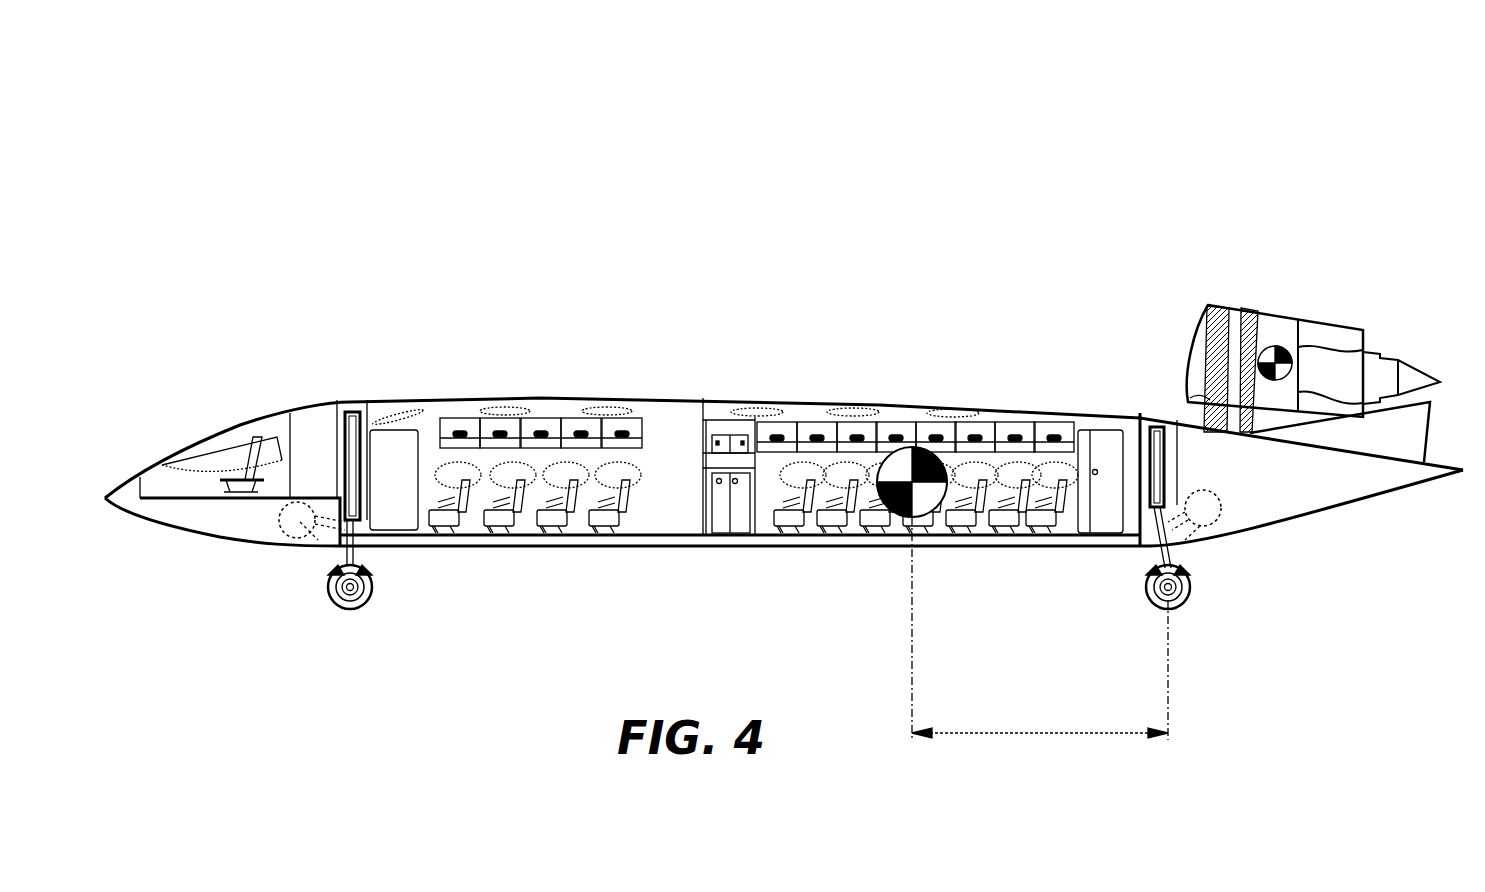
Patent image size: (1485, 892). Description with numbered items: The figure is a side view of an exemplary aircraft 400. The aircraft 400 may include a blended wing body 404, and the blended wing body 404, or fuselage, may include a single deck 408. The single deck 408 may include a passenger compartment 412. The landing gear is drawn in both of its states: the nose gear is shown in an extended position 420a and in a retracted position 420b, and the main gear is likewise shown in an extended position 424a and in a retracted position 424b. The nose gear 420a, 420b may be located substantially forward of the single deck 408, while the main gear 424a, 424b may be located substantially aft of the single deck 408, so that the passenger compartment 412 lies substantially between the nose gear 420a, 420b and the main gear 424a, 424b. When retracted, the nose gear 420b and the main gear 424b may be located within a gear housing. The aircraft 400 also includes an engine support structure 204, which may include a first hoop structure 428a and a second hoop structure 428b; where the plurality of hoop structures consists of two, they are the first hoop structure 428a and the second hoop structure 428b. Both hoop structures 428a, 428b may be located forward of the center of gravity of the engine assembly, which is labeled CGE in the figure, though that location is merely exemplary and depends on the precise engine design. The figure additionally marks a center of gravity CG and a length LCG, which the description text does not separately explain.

The aircraft 400 is at (784, 434).
The blended wing body 404 is at (398, 399).
The single deck 408 is at (638, 536).
The passenger compartment 412 is at (675, 400).
The nose gear in extended position 420a is at (355, 610).
The nose gear in retracted position 420b is at (293, 542).
The main gear in extended position 424a is at (1168, 606).
The main gear in retracted position 424b is at (1217, 524).
The engine support structure 204 is at (1301, 280).
The first hoop structure 428a is at (1216, 347).
The second hoop structure 428b is at (1262, 322).
The aircraft center of gravity CG is at (920, 448).
The center of gravity of engine assembly CGE is at (1276, 348).
The distance from center of gravity to main gear LCG is at (1040, 643).